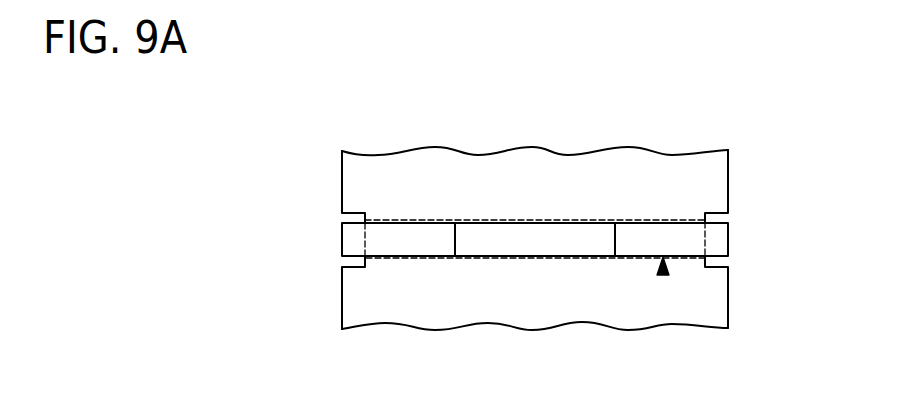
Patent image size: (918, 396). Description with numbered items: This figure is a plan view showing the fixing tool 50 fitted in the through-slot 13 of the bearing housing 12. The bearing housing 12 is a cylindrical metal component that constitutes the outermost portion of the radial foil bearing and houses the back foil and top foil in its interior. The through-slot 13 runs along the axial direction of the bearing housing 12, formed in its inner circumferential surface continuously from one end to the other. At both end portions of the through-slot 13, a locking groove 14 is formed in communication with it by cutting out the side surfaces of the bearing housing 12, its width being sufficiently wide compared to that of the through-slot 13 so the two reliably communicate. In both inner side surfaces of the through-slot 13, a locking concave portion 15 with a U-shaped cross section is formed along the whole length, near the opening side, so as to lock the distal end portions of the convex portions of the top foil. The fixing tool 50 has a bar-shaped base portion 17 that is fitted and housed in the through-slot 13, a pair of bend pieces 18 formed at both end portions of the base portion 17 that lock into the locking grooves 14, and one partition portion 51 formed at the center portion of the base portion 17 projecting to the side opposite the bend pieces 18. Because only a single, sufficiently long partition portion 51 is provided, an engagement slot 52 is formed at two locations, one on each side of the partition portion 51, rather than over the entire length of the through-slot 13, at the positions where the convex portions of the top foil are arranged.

The bearing housing 12 is at (340, 183).
The through-slot 13 is at (407, 257).
The locking groove 14 is at (351, 266).
The locking concave portion 15 is at (560, 222).
The base portion 17 is at (634, 257).
The bend piece 18 is at (340, 238).
The fixing tool 50 is at (663, 274).
The partition portion 51 is at (503, 242).
The engagement slot 52 is at (396, 242).